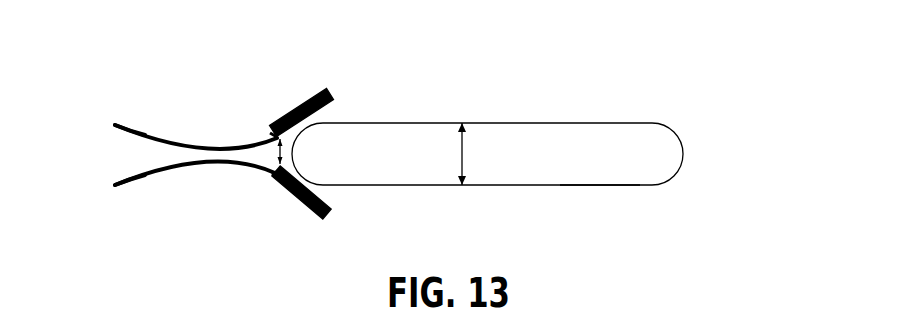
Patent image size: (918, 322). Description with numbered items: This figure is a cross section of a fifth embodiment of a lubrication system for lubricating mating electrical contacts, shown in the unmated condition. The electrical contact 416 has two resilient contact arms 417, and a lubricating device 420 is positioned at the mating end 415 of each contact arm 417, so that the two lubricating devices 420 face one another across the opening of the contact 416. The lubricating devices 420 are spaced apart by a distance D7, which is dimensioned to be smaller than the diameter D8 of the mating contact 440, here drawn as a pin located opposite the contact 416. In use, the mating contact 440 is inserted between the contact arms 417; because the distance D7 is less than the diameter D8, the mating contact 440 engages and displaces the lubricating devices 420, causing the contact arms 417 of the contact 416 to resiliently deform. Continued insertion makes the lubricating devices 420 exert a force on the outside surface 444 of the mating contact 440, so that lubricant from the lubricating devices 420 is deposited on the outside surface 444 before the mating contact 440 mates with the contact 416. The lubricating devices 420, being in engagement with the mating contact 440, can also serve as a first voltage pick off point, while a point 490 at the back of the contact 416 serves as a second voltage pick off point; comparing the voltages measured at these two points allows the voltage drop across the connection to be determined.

The mating end 415 is at (272, 135).
The electrical contact 416 is at (213, 100).
The contact arm 417 is at (223, 143).
The lubricating device 420 is at (330, 93).
The mating contact 440 is at (512, 123).
The outside surface 444 is at (623, 185).
The point at the back of the contact 490 is at (118, 125).
The distance D7 is at (283, 153).
The diameter D8 is at (462, 155).